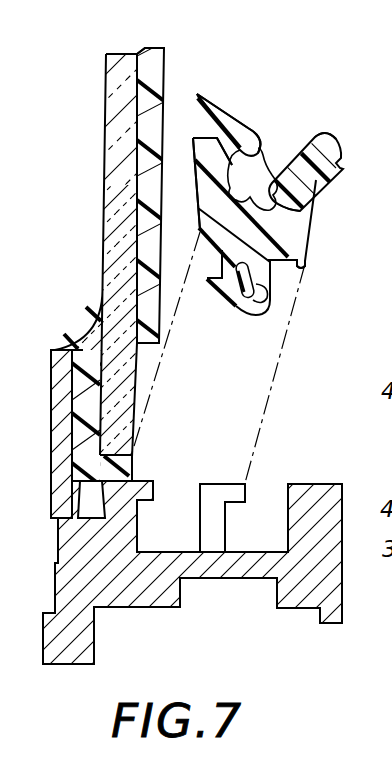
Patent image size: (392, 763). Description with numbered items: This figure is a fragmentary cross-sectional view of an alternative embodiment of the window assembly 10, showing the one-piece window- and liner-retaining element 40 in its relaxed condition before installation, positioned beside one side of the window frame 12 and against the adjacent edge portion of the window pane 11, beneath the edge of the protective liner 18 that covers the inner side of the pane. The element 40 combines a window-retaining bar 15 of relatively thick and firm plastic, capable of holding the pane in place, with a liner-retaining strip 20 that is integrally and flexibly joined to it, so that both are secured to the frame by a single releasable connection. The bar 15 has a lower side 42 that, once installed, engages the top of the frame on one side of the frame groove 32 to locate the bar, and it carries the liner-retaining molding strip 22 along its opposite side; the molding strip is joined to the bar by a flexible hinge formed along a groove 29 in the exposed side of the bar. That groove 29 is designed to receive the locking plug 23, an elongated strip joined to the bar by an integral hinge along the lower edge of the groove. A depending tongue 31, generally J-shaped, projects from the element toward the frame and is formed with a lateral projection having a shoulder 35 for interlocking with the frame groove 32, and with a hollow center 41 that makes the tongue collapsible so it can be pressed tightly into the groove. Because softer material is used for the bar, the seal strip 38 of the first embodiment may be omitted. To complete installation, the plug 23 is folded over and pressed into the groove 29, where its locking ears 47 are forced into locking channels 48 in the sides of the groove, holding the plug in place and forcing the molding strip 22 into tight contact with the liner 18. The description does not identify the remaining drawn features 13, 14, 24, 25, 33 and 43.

The window assembly 10 is at (85, 121).
The window pane 11 is at (108, 152).
The window frame 12 is at (48, 472).
The base side wall 13 is at (58, 437).
The resilient liner 14 is at (78, 395).
The window-retaining bar 15 is at (313, 227).
The protective liner 18 is at (162, 64).
The liner-retaining strip 20 is at (238, 98).
The liner-retaining molding strip 22 is at (223, 122).
The locking plug 23 is at (341, 180).
The latch root end 24 is at (196, 103).
The latch tongue 25 is at (200, 94).
The groove 29 is at (203, 197).
The depending tongue 31 is at (224, 319).
The groove 32 is at (170, 508).
The base tab 33 is at (152, 482).
The shoulder 35 is at (210, 281).
The seal strip 38 is at (198, 550).
The window- and liner-retaining element 40 is at (293, 133).
The hollow center 41 is at (272, 306).
The lower side 42 is at (308, 268).
The block lower end 43 is at (292, 207).
The locking ears 47 is at (216, 200).
The locking channels 48 is at (228, 93).